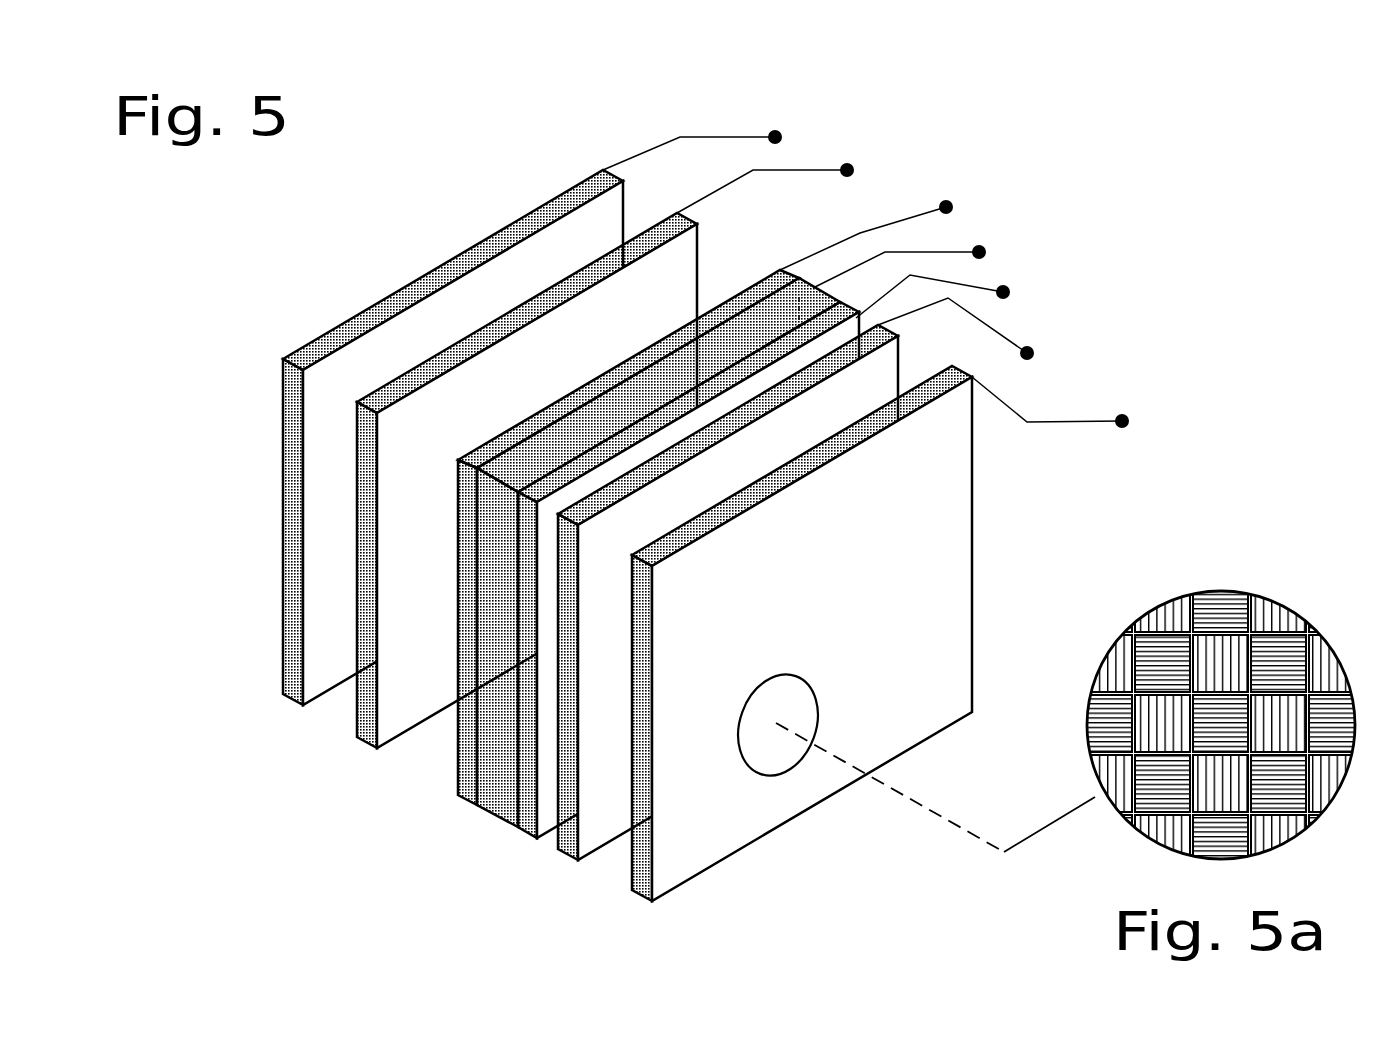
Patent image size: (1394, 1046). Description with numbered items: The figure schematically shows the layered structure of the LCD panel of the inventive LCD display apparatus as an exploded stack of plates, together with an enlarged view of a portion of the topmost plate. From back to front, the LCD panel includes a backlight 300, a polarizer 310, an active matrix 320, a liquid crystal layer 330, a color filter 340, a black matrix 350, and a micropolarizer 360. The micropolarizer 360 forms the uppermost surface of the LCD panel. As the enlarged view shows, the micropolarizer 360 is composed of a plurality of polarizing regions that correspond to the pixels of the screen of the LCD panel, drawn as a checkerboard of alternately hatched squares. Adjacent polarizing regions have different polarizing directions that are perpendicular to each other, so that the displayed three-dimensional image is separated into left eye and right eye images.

The backlight 300 is at (297, 693).
The polarizer 310 is at (368, 738).
The active matrix 320 is at (462, 798).
The liquid crystal layer 330 is at (500, 815).
The color filter 340 is at (530, 830).
The black matrix 350 is at (570, 852).
The micropolarizer 360 is at (645, 893).